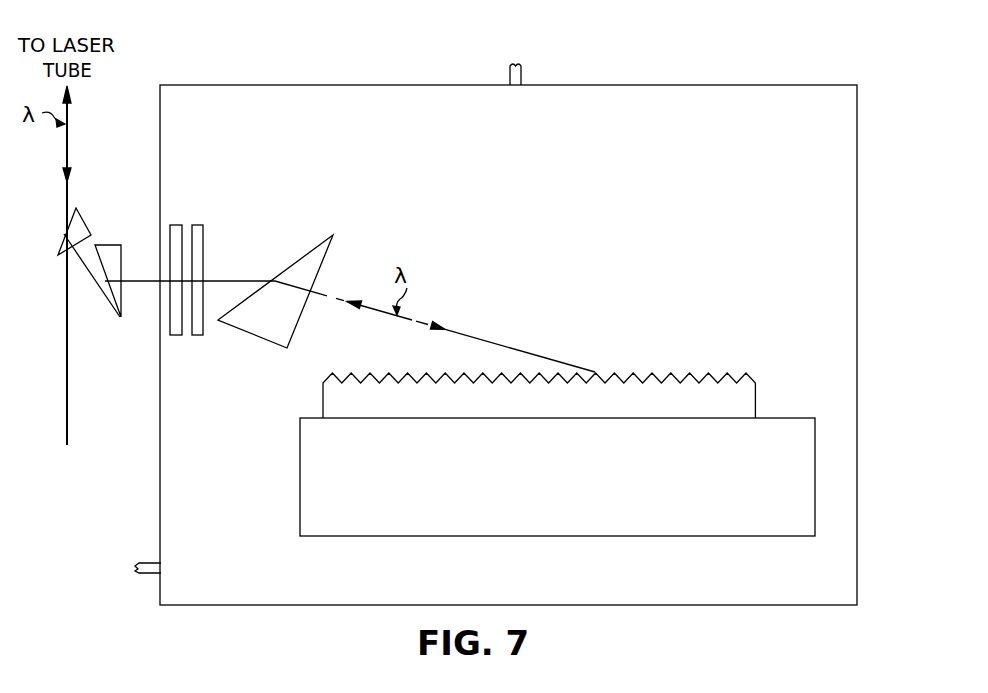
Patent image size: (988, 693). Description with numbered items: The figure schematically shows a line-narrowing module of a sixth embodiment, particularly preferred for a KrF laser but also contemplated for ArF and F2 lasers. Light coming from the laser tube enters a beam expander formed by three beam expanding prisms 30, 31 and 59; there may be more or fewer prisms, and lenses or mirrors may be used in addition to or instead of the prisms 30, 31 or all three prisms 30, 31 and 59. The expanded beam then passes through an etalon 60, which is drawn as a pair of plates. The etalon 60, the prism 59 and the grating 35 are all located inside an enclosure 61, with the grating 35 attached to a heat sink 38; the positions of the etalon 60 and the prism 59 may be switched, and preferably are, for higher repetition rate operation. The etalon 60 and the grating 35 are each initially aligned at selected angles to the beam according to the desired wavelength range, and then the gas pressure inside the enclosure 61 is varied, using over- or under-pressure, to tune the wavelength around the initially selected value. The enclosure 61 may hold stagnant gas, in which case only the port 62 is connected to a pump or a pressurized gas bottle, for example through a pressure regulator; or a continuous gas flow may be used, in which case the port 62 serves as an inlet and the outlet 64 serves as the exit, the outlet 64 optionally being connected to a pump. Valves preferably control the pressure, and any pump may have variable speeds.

The beam expanding prism 30 is at (86, 220).
The beam expanding prism 31 is at (112, 304).
The grating 35 is at (712, 372).
The heat sink 38 is at (815, 513).
The beam expanding prism 59 is at (312, 252).
The etalon 60 is at (197, 223).
The enclosure 61 is at (565, 85).
The port 62 is at (508, 67).
The outlet 64 is at (135, 570).